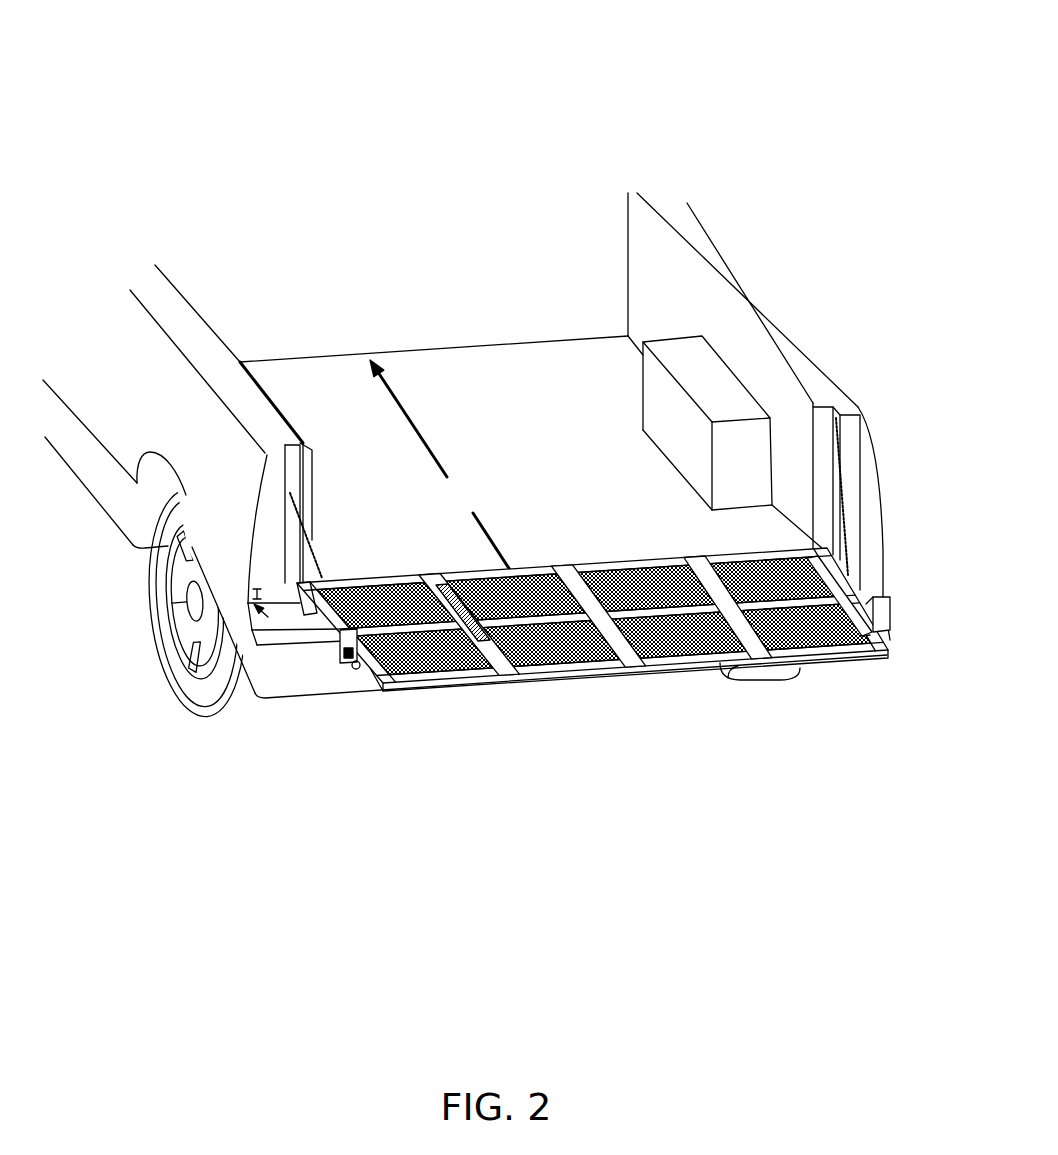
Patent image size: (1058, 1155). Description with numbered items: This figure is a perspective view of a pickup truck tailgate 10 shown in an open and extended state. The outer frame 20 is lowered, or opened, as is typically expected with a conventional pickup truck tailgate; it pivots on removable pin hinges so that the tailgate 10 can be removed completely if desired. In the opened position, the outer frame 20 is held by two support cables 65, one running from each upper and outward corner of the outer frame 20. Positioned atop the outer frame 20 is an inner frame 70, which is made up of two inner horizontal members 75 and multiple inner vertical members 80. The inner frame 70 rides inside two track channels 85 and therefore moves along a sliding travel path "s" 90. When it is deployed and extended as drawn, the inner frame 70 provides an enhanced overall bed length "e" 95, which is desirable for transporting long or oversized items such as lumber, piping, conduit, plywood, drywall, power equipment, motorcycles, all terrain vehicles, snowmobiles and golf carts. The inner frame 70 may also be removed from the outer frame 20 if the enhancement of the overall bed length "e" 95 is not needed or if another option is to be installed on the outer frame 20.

The tailgate 10 is at (158, 183).
The outer frame 20 is at (620, 703).
The support cables 65 is at (315, 565).
The inner frame 70 is at (890, 618).
The inner horizontal members 75 is at (453, 678).
The inner vertical members 80 is at (503, 662).
The track channels 85 is at (357, 668).
The sliding travel path "s" 90 is at (478, 648).
The overall bed length "e" 95 is at (547, 633).